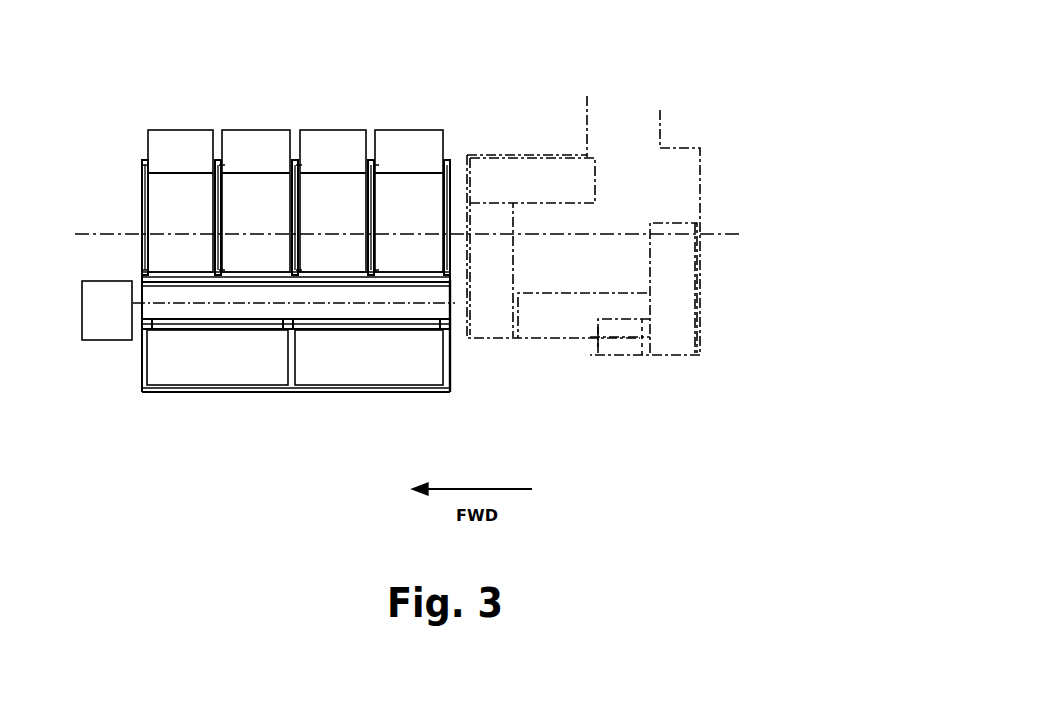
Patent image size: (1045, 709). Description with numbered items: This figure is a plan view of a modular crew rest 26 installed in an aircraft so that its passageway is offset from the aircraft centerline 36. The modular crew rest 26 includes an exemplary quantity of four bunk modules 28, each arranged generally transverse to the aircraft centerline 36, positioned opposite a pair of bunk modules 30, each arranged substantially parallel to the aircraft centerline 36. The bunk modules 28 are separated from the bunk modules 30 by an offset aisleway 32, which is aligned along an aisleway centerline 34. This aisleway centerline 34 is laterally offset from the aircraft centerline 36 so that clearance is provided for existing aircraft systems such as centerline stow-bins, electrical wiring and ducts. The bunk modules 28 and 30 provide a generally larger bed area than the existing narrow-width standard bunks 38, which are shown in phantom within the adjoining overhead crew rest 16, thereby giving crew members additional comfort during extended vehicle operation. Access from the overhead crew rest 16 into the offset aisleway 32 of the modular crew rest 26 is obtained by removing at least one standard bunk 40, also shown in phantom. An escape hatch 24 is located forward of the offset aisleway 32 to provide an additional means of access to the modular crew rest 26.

The overhead crew rest 16 is at (545, 131).
The escape hatch 24 is at (112, 327).
The modular crew rest 26 is at (440, 68).
The bunk modules 28 is at (295, 170).
The bunk modules 30 is at (295, 400).
The offset aisleway 32 is at (214, 308).
The aisleway centerline 34 is at (452, 305).
The aircraft centerline 36 is at (740, 233).
The standard bunks 38 is at (630, 305).
The standard bunk 40 is at (490, 337).